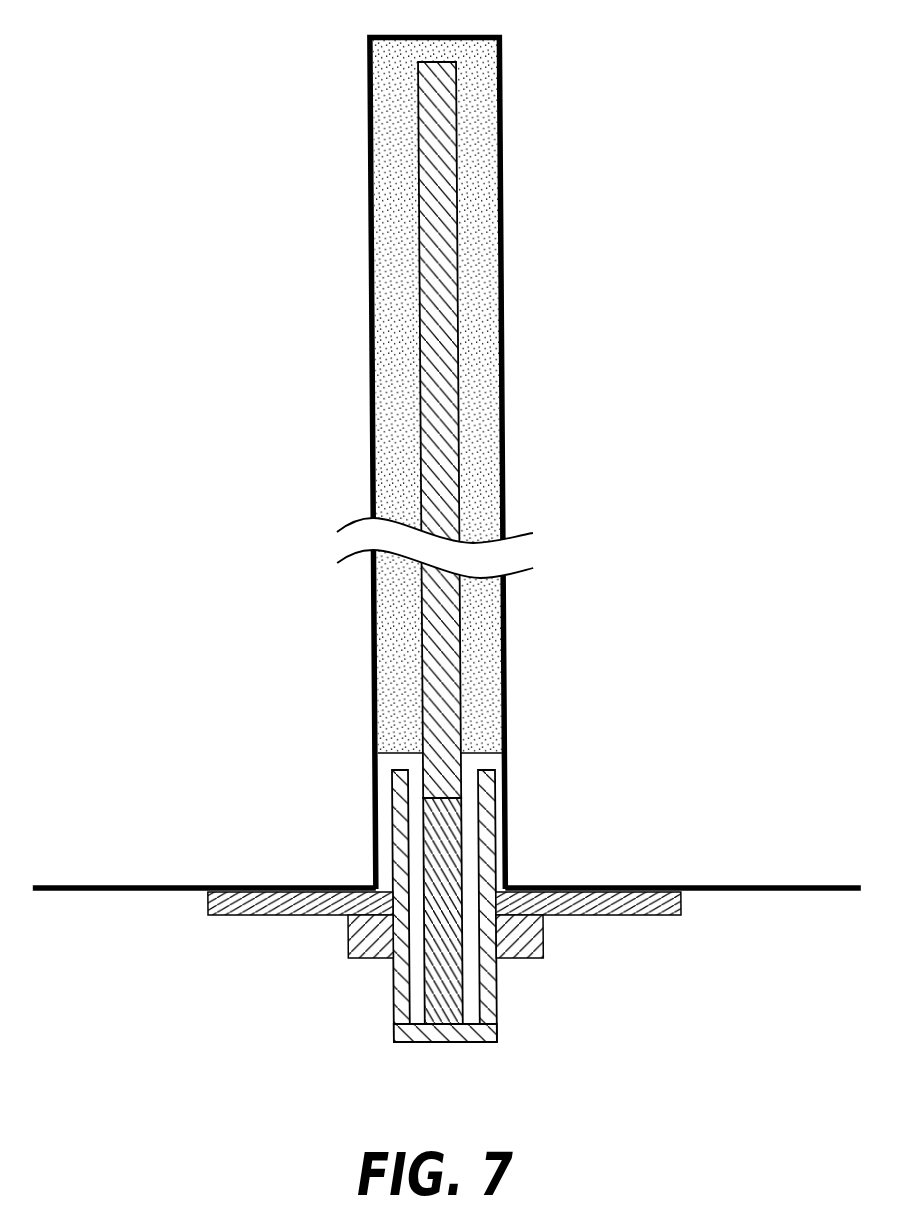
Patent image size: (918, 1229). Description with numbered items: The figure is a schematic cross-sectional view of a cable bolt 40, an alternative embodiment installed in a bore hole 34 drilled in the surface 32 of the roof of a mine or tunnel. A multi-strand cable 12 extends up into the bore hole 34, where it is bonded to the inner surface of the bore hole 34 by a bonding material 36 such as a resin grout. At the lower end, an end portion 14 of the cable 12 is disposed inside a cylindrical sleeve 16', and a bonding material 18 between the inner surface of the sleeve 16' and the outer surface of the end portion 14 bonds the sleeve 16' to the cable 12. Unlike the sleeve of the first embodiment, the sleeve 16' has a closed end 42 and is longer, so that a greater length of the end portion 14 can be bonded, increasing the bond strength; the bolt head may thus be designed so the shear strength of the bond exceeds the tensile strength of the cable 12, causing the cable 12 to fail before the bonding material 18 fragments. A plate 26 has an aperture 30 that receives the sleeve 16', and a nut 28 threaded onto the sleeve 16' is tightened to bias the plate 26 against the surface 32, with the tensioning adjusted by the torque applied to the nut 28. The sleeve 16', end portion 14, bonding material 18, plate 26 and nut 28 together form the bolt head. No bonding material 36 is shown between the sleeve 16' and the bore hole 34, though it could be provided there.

The multi-strand cable 12 is at (455, 303).
The end portion 14 is at (438, 1000).
The sleeve 16' is at (350, 915).
The bonding material 18 is at (468, 1000).
The plate 26 is at (206, 915).
The nut 28 is at (345, 947).
The aperture 30 is at (497, 935).
The surface 32 is at (747, 891).
The bore hole 34 is at (372, 158).
The bonding material 36 is at (406, 250).
The cable bolt 40 is at (478, 380).
The closed end 42 is at (413, 1035).